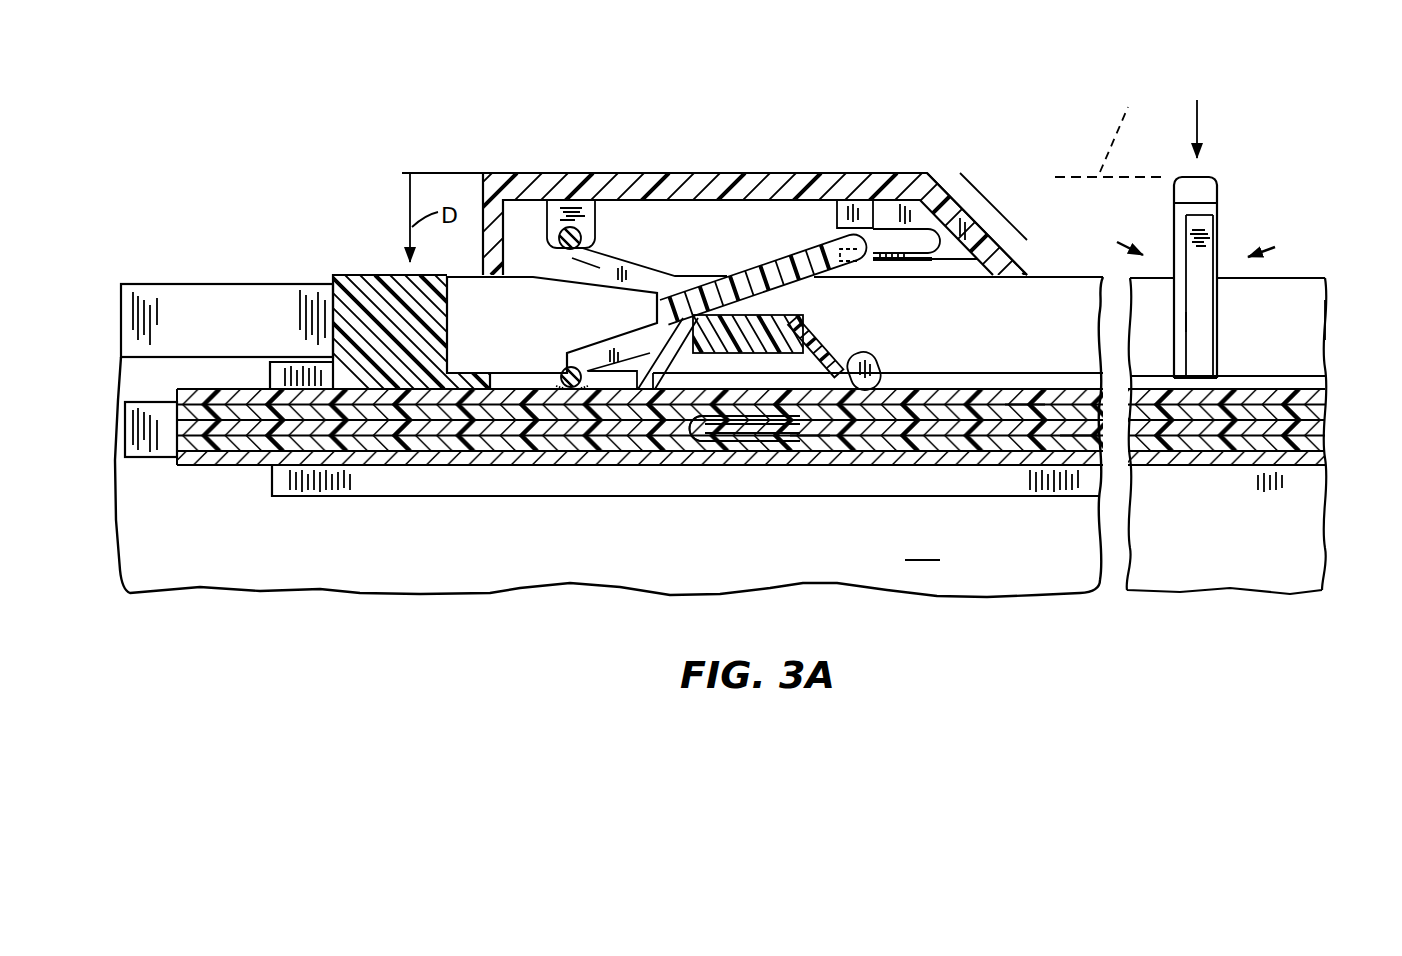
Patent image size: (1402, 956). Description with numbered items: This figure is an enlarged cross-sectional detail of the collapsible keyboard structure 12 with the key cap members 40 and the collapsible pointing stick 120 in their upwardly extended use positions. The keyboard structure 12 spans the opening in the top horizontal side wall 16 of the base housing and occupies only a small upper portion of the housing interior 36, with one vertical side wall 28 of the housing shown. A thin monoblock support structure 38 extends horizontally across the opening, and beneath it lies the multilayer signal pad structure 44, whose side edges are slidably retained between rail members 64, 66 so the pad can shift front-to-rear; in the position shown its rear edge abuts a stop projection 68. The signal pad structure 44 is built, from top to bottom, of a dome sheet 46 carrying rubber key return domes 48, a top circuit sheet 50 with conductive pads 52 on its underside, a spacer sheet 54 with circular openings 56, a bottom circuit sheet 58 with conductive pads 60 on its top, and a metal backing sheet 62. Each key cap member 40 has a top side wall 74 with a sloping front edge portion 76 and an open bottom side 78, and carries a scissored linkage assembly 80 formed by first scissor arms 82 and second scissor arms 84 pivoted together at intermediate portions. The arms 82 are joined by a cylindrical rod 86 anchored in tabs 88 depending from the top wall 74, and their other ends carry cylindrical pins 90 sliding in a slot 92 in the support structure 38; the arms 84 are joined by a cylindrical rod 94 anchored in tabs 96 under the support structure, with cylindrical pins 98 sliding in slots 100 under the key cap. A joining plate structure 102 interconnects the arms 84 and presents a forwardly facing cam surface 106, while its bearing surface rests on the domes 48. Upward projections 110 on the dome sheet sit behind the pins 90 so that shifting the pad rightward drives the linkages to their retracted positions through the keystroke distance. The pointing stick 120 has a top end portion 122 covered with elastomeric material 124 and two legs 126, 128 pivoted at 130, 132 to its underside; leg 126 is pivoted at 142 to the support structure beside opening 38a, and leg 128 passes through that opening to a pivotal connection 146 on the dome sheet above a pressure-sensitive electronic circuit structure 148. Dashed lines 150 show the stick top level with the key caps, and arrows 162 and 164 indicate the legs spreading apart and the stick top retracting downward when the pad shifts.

The collapsible keyboard structure 12 is at (1018, 212).
The top horizontal side wall 16 is at (232, 283).
The vertical side wall 28 is at (922, 547).
The interior of the base housing 36 is at (152, 542).
The monoblock support structure 38 is at (345, 275).
The opening in the support structure 38a is at (1325, 337).
The key cap member 40 is at (787, 172).
The multilayer signal pad structure 44 is at (217, 378).
The dome sheet 46 is at (1055, 400).
The key return dome 48 is at (832, 358).
The top circuit sheet 50 is at (1025, 404).
The electrically conductive pad 52 is at (690, 433).
The spacer sheet 54 is at (983, 376).
The circular opening 56 is at (810, 445).
The bottom circuit sheet 58 is at (1080, 443).
The electrically conductive pad 60 is at (728, 445).
The metal backing sheet 62 is at (1002, 466).
The rail member 64 is at (263, 370).
The rail member 66 is at (272, 482).
The stop projection 68 is at (150, 462).
The top side wall 74 is at (640, 173).
The sloping front edge portion 76 is at (965, 205).
The open bottom side 78 is at (533, 280).
The scissored linkage assembly 80 is at (707, 218).
The first scissor arm 82 is at (607, 267).
The second scissor arm 84 is at (597, 347).
The cylindrical rod 86 is at (560, 227).
The tab 88 is at (597, 205).
The cylindrical pin 90 is at (868, 376).
The slot 92 is at (938, 387).
The cylindrical rod 94 is at (577, 395).
The tab 96 is at (560, 372).
The cylindrical pin 98 is at (866, 218).
The slot 100 is at (917, 252).
The joining plate structure 102 is at (782, 232).
The cam surface 106 is at (792, 296).
The upward projection 110 is at (818, 392).
The collapsible pointing stick 120 is at (1250, 173).
The top end portion 122 is at (1215, 210).
The elastomeric material 124 is at (1205, 187).
The leg portion 126 is at (1180, 298).
The leg portion 128 is at (1200, 320).
The pivot 130 is at (1180, 222).
The pivot 132 is at (1198, 225).
The pivotal connection 142 is at (1187, 377).
The pivotal connection 146 is at (1197, 393).
The pressure-sensitive electronic circuit structure 148 is at (1243, 390).
The dashed lines 150 is at (1128, 102).
The arrows 162 is at (1150, 258).
The arrows 164 is at (1200, 118).